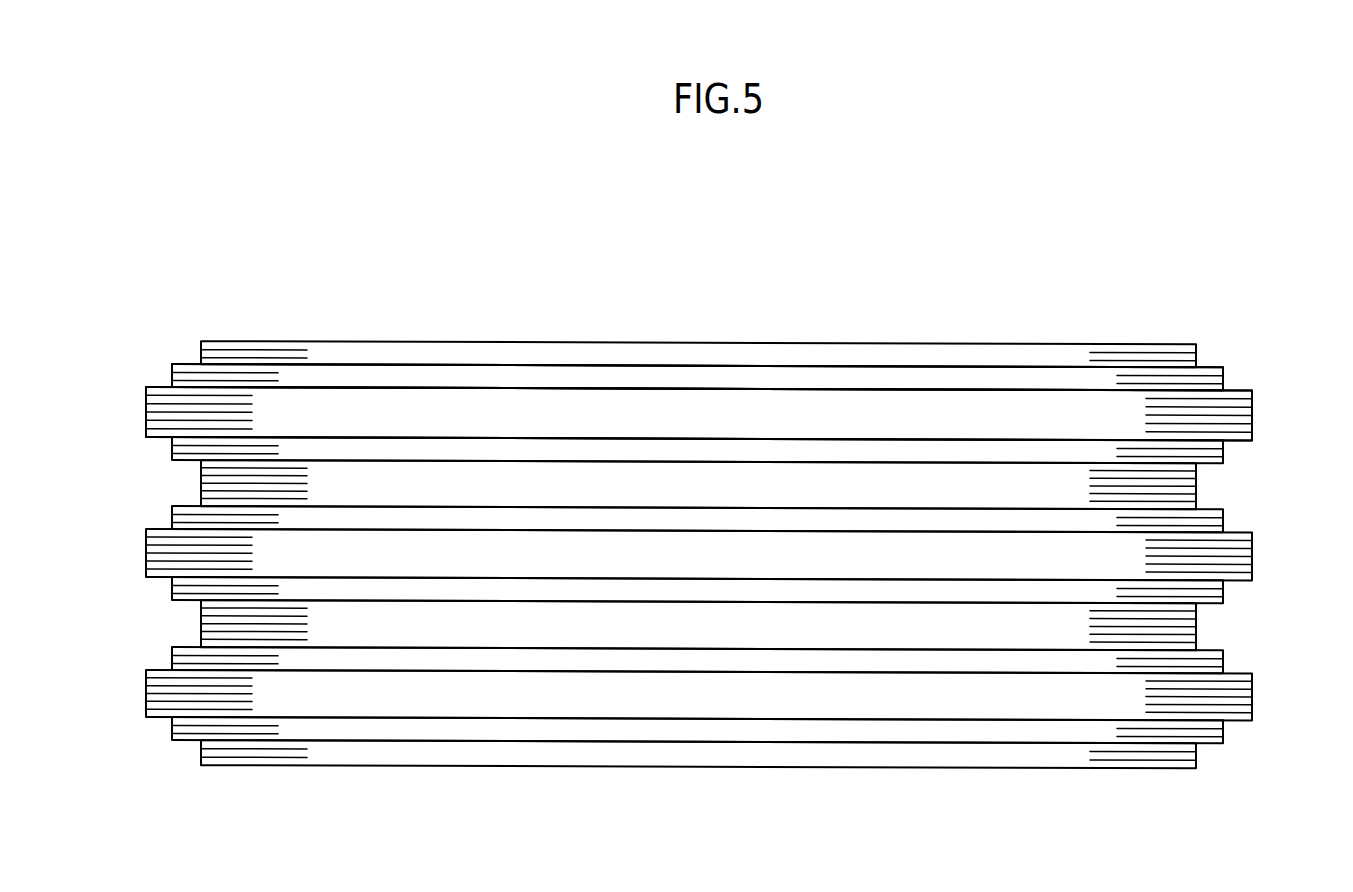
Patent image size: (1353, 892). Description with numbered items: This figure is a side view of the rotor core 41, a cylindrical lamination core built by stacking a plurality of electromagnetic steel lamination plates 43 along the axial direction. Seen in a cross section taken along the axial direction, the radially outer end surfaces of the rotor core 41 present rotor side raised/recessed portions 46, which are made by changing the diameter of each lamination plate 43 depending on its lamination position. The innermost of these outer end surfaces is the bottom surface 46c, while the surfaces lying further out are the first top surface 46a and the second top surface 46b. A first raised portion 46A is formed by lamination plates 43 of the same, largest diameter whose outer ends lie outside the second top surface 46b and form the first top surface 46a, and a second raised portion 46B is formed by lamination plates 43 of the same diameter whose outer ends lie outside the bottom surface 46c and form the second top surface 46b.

The rotor core 41 is at (588, 257).
The lamination plate 43 is at (202, 351).
The rotor side raised/recessed portions 46 is at (108, 468).
The first top surface 46a is at (145, 548).
The second top surface 46b is at (172, 517).
The bottom surface 46c is at (200, 628).
The first raised portion 46A is at (1253, 414).
The second raised portion 46B is at (1226, 382).